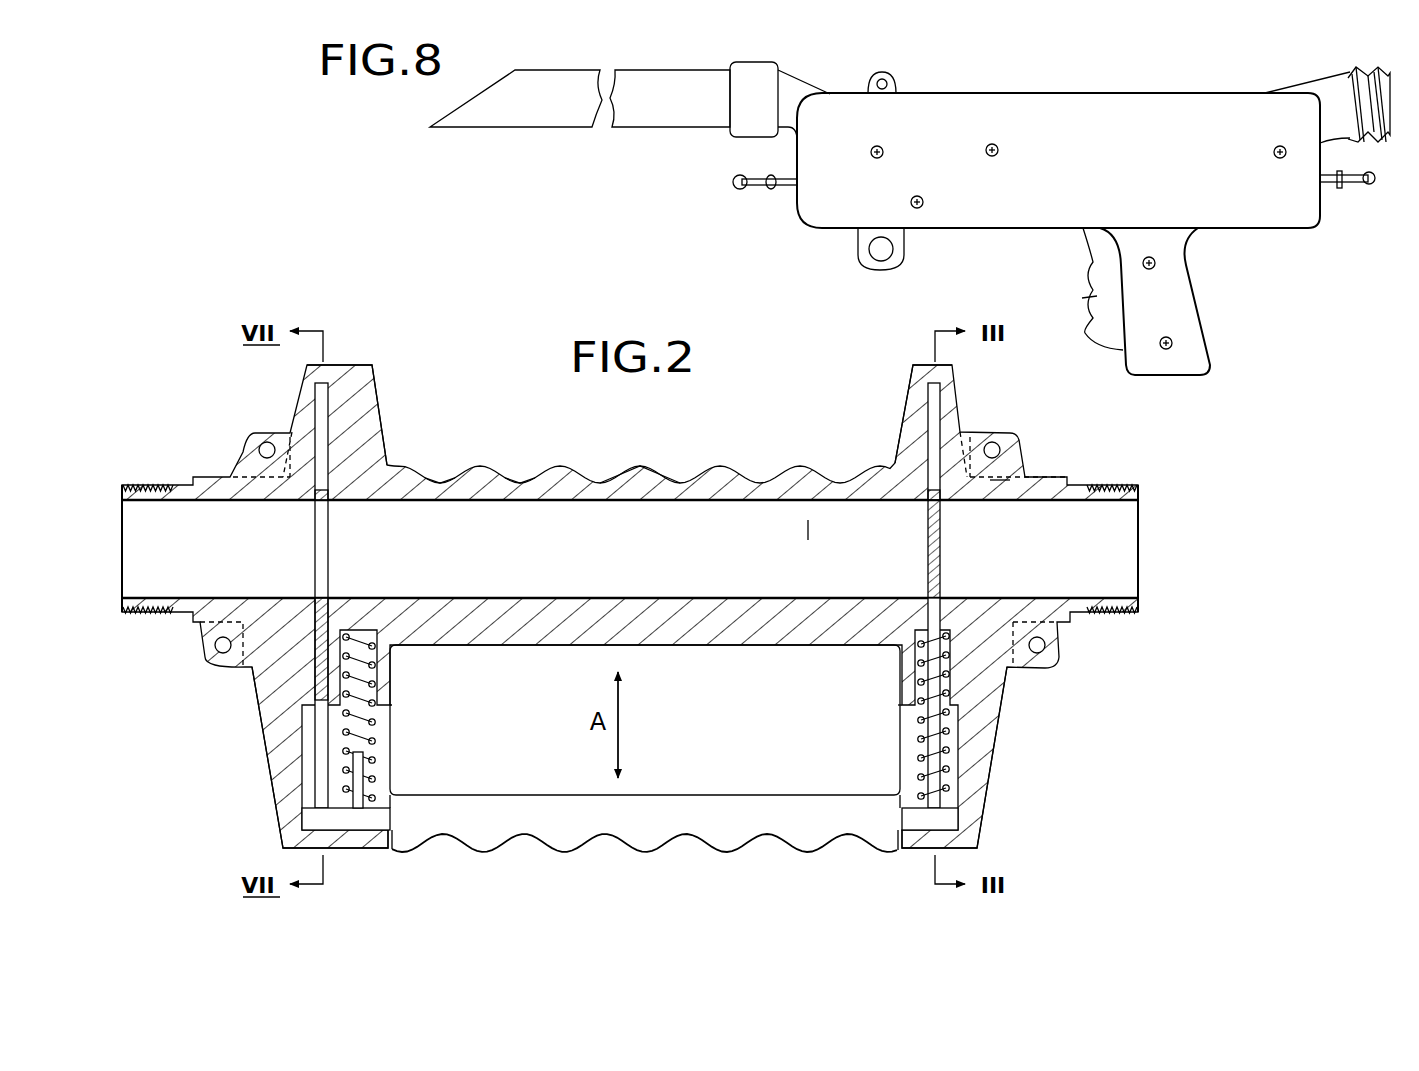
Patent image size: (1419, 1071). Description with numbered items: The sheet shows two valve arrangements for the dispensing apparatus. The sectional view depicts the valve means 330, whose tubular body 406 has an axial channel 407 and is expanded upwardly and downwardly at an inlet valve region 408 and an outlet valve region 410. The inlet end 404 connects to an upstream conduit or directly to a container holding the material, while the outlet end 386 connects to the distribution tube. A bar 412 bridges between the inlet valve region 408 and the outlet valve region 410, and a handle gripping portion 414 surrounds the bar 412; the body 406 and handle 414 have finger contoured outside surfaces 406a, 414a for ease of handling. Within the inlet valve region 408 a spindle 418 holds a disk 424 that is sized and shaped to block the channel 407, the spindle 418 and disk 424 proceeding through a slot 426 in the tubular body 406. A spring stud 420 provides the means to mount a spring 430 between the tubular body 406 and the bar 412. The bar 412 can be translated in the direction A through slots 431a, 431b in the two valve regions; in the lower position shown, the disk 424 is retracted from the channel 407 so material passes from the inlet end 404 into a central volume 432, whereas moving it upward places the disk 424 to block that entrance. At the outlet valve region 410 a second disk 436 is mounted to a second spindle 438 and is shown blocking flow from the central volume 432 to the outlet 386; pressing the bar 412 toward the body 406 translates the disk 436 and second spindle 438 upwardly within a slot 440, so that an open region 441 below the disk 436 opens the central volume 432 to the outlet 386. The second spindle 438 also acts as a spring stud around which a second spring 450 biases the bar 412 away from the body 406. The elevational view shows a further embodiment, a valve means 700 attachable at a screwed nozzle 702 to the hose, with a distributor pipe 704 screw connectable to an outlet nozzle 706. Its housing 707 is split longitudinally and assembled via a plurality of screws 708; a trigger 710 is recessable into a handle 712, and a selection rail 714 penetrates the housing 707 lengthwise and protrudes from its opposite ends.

In FIG. 8, the valve means 700 is at (996, 86).
In FIG. 8, the screwed nozzle 702 is at (1352, 62).
In FIG. 8, the distributor pipe 704 is at (687, 70).
In FIG. 8, the outlet nozzle 706 is at (803, 78).
In FIG. 8, the housing 707 is at (1122, 93).
In FIG. 8, the screws 708 is at (998, 150).
In FIG. 8, the trigger 710 is at (1093, 300).
In FIG. 8, the handle 712 is at (1177, 298).
In FIG. 8, the selection rail 714 is at (1350, 190).
In FIG. 2, the valve means 330 is at (730, 458).
In FIG. 2, the outlet end 386 is at (1127, 467).
In FIG. 2, the inlet end 404 is at (125, 483).
In FIG. 2, the tubular body 406 is at (618, 472).
In FIG. 2, the finger contoured outside surface 406a is at (425, 478).
In FIG. 2, the axial channel 407 is at (458, 507).
In FIG. 2, the inlet valve region 408 is at (380, 400).
In FIG. 2, the outlet valve region 410 is at (957, 390).
In FIG. 2, the bar 412 is at (390, 793).
In FIG. 2, the handle gripping portion 414 is at (700, 808).
In FIG. 2, the finger contoured outside surface 414a is at (527, 836).
In FIG. 2, the spindle 418 is at (323, 758).
In FIG. 2, the spring stud 420 is at (358, 762).
In FIG. 2, the disk 424 is at (323, 670).
In FIG. 2, the slot 426 is at (323, 420).
In FIG. 2, the spring 430 is at (372, 775).
In FIG. 2, the slot 431a is at (388, 703).
In FIG. 2, the slot 431b is at (900, 728).
In FIG. 2, the central volume 432 is at (805, 540).
In FIG. 2, the second disk 436 is at (942, 582).
In FIG. 2, the second spindle 438 is at (935, 738).
In FIG. 2, the slot 440 is at (940, 425).
In FIG. 2, the open region 441 is at (935, 690).
In FIG. 2, the second spring 450 is at (948, 773).